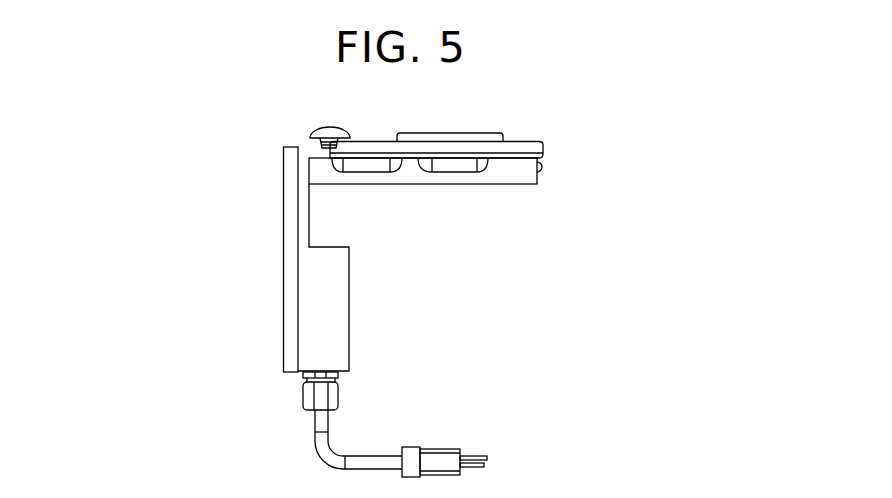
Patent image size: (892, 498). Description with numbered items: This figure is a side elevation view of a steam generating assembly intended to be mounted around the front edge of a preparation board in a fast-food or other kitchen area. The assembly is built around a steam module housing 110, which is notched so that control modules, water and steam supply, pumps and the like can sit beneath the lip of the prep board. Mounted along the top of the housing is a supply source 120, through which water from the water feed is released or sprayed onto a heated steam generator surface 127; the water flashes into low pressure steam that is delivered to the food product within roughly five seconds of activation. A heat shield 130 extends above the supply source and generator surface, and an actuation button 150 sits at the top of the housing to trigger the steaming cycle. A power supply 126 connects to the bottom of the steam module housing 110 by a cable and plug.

The steam module housing 110 is at (290, 250).
The supply source 120 is at (537, 183).
The power supply 126 is at (320, 459).
The steam generator surface 127 is at (448, 168).
The heat shield 130 is at (525, 148).
The actuation button 150 is at (320, 135).